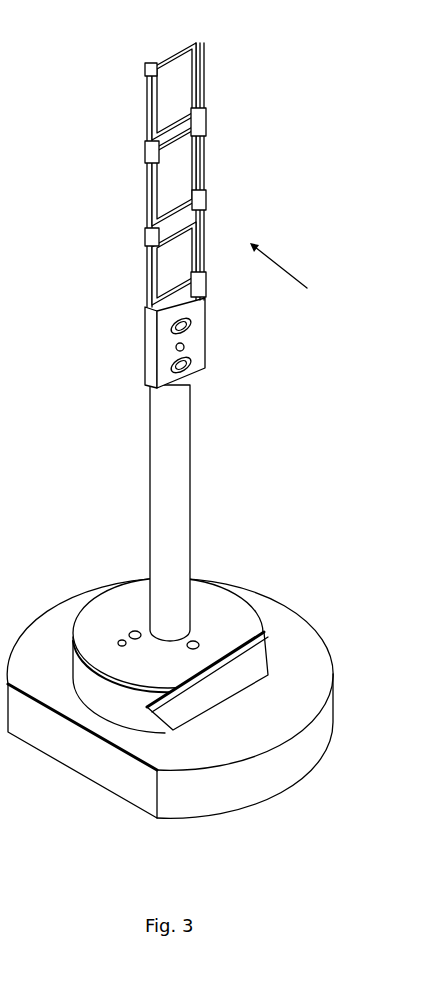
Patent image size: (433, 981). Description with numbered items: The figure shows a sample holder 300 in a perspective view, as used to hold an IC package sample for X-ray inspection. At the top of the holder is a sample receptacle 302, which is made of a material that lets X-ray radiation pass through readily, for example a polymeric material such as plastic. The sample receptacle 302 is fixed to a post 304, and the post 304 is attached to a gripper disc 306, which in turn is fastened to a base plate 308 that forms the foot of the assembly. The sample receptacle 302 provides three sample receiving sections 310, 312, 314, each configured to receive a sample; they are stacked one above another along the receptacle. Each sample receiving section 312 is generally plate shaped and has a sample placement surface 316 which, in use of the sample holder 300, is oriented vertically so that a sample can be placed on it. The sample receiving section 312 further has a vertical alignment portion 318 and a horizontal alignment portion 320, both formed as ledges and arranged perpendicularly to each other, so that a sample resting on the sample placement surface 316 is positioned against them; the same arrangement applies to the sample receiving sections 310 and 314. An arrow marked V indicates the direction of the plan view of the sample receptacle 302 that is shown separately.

The sample holder 300 is at (116, 50).
The sample receptacle 302 is at (147, 126).
The post 304 is at (150, 471).
The gripper disc 306 is at (80, 606).
The base plate 308 is at (318, 636).
The sample receiving section 310 is at (182, 90).
The sample receiving section 312 is at (185, 175).
The sample receiving section 314 is at (175, 270).
The sample placement surface 316 is at (162, 181).
The vertical alignment portion 318 is at (158, 211).
The horizontal alignment portion 320 is at (207, 142).
The plan view direction V is at (292, 280).